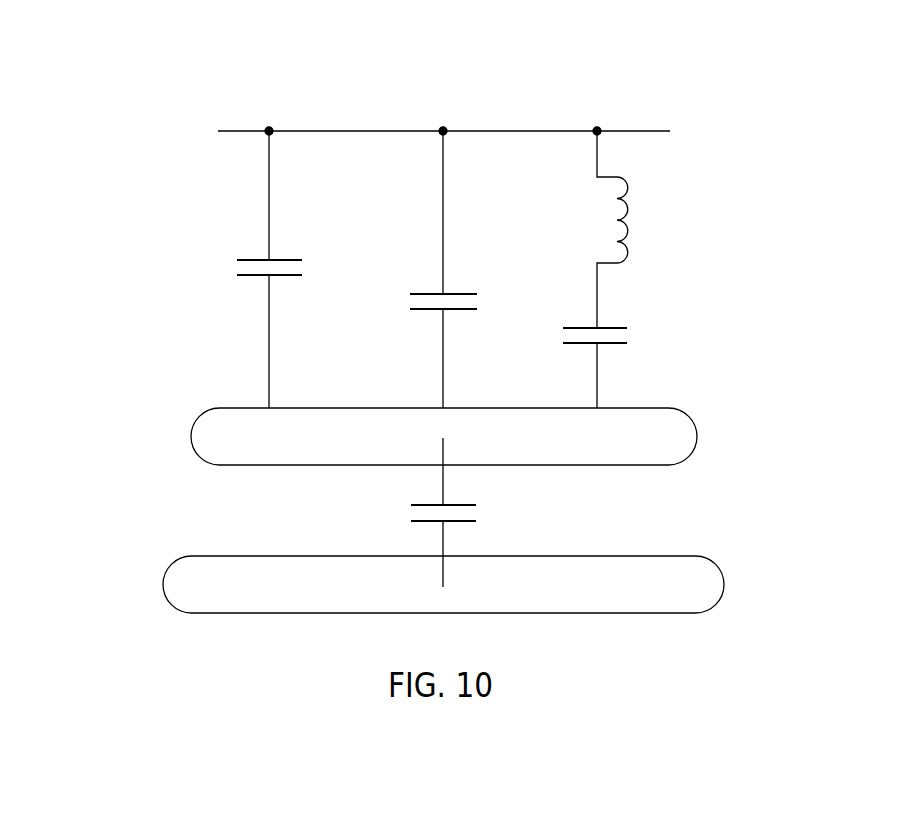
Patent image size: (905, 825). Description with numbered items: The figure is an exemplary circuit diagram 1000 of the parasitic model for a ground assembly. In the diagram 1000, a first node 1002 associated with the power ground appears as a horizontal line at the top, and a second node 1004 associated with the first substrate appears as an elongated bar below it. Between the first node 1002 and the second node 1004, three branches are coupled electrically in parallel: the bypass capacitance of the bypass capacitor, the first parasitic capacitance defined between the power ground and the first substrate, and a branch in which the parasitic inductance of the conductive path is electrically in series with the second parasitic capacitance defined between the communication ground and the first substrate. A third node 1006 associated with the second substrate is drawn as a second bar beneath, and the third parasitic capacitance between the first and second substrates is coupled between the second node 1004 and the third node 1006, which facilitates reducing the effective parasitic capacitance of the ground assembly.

The circuit diagram 1000 is at (128, 72).
The first node 1002 is at (317, 130).
The second node 1004 is at (693, 413).
The third node 1006 is at (722, 563).